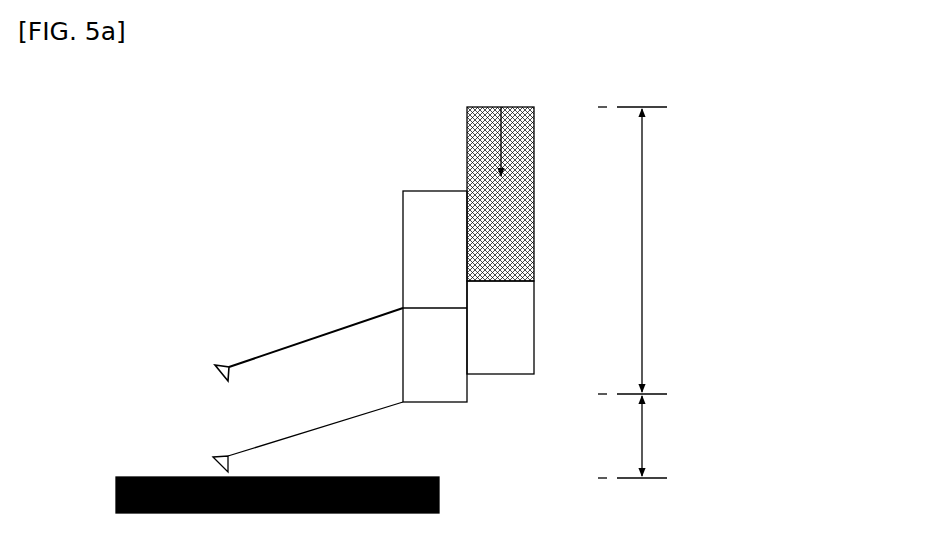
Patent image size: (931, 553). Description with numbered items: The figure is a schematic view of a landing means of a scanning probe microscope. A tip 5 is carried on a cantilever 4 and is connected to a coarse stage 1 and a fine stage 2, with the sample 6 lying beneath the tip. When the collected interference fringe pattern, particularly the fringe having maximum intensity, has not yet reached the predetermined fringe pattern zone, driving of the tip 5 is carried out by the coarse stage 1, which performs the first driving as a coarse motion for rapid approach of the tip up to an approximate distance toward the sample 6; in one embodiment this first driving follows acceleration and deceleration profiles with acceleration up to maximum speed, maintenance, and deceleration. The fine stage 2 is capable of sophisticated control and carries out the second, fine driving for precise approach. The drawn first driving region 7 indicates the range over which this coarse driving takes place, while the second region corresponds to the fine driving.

The coarse stage 1 is at (529, 103).
The fine stage 2 is at (396, 189).
The cantilever 4 is at (209, 357).
The tip 5 is at (216, 379).
The sample 6 is at (113, 480).
The first driving region 7 is at (759, 224).